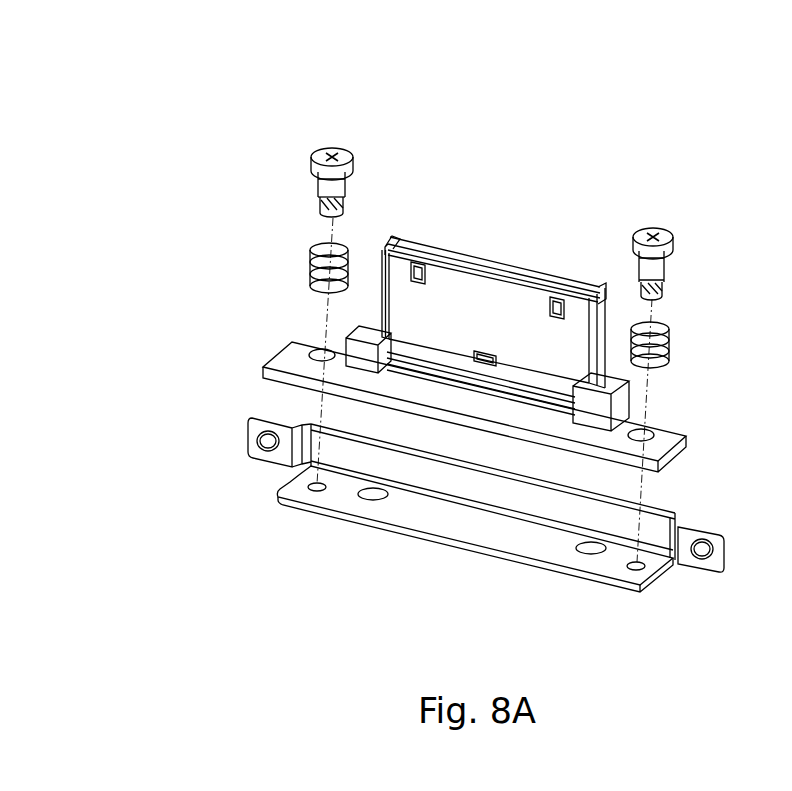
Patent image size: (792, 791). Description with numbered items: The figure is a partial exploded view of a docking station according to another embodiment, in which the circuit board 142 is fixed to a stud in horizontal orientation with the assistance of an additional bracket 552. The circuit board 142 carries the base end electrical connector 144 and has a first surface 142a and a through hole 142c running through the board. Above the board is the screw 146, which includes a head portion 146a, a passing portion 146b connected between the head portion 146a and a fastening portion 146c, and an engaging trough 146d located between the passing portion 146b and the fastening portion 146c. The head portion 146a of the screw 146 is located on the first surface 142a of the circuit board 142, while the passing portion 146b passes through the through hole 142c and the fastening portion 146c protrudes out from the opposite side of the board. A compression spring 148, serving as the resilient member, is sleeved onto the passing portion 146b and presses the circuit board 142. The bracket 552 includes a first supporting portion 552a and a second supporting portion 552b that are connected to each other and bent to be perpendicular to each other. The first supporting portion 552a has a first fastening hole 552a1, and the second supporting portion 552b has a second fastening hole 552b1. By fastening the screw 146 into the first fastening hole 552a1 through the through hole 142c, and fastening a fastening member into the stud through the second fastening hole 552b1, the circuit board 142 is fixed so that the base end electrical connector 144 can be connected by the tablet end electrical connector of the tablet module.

The screw 146 is at (285, 194).
The head portion 146a is at (312, 156).
The passing portion 146b is at (318, 182).
The fastening portion 146c is at (320, 210).
The engaging trough 146d is at (346, 202).
The base end electrical connector 144 is at (486, 259).
The compression spring 148 is at (311, 275).
The circuit board 142 is at (404, 395).
The first surface 142a is at (294, 355).
The through hole 142c is at (309, 350).
The bracket 552 is at (445, 554).
The first supporting portion 552a is at (400, 528).
The first fastening hole 552a1 is at (308, 483).
The second supporting portion 552b is at (503, 552).
The second fastening hole 552b1 is at (711, 558).